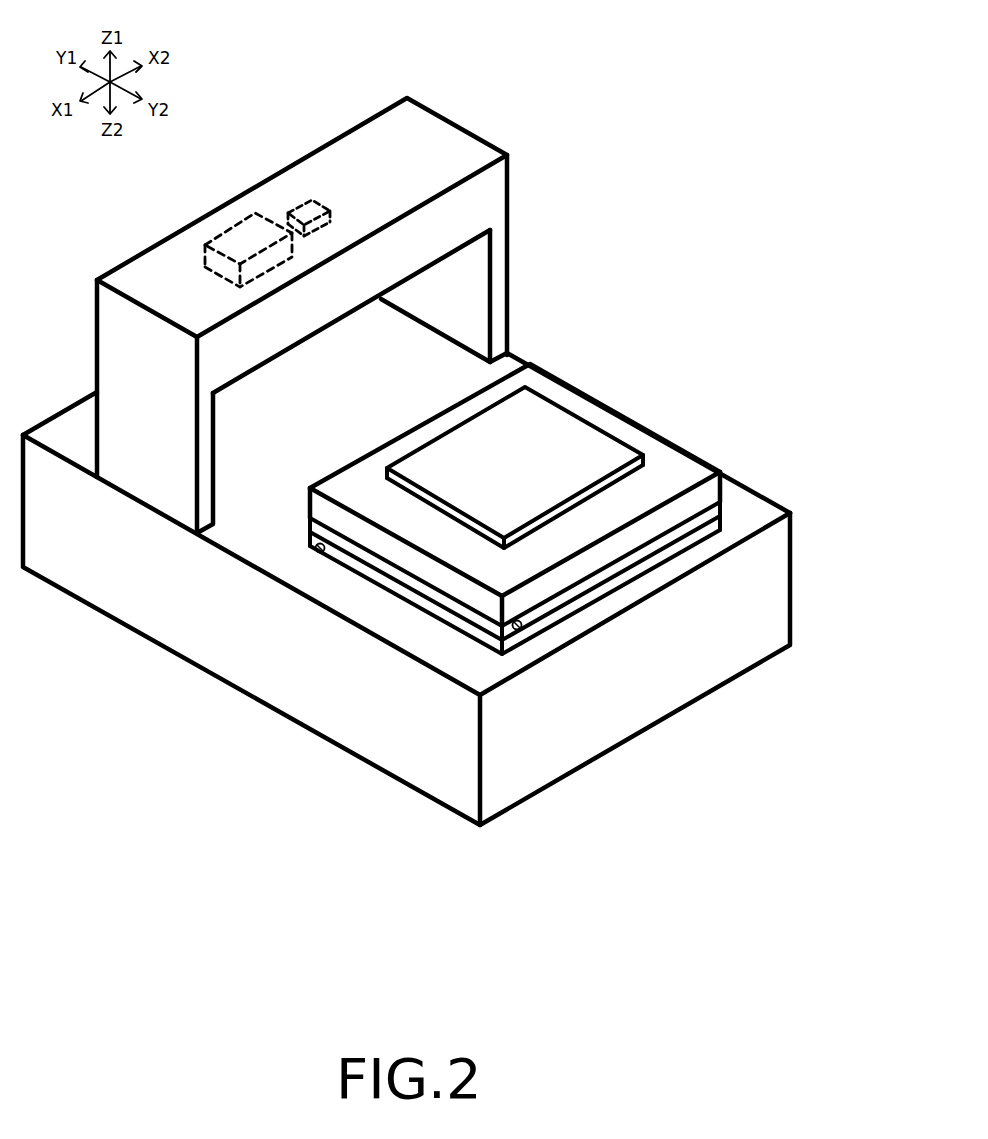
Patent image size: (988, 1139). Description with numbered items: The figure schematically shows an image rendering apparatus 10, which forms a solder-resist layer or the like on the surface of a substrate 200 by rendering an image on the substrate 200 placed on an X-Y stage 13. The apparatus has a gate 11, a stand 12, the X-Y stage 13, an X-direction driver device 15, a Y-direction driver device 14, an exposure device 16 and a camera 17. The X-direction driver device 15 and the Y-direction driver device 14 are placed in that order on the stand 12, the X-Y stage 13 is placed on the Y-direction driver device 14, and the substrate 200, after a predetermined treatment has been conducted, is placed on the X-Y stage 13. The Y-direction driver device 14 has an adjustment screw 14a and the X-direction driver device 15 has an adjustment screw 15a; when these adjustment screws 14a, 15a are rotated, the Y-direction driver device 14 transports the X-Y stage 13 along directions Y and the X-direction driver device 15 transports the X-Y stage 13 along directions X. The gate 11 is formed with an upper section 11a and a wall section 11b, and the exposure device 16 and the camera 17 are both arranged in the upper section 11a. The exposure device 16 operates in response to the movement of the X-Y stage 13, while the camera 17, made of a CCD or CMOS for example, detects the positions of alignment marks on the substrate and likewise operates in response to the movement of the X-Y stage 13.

The image rendering apparatus 10 is at (524, 96).
The gate 11 is at (390, 118).
The upper section 11a is at (394, 262).
The wall section 11b is at (498, 301).
The stand 12 is at (781, 578).
The X-Y stage 13 is at (672, 457).
The Y-direction driver device 14 is at (725, 502).
The adjustment screw 14a is at (522, 630).
The X-direction driver device 15 is at (720, 524).
The adjustment screw 15a is at (315, 550).
The exposure device 16 is at (234, 223).
The camera 17 is at (341, 190).
The substrate 200 is at (600, 407).